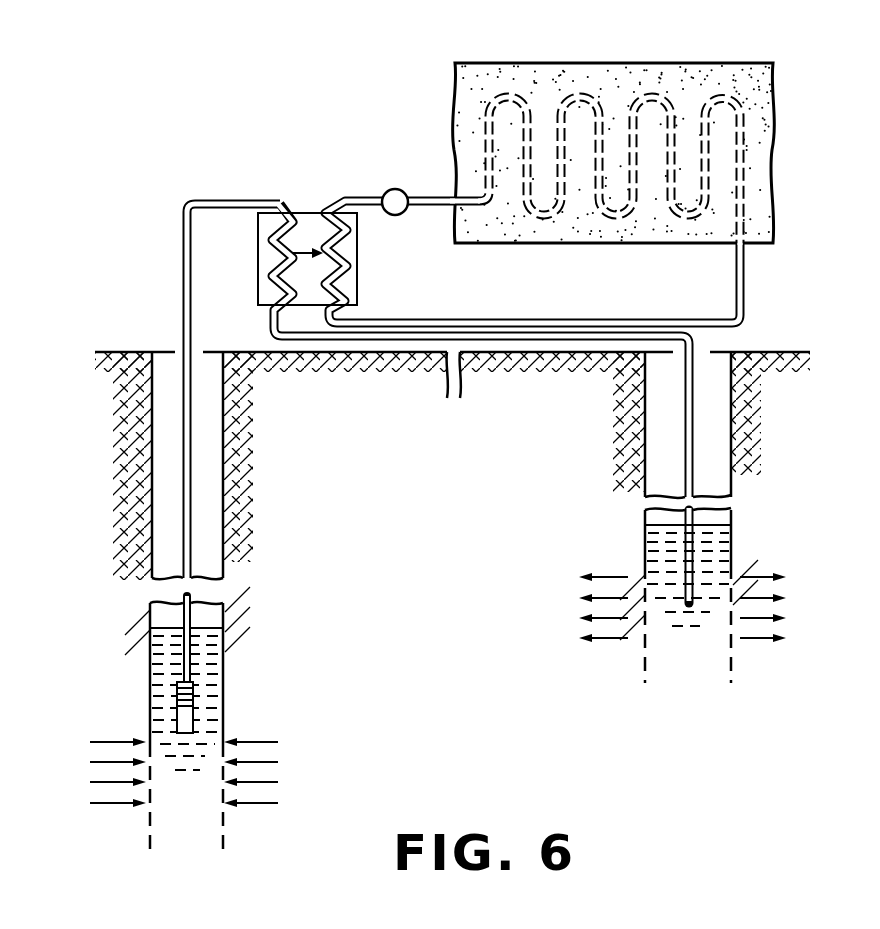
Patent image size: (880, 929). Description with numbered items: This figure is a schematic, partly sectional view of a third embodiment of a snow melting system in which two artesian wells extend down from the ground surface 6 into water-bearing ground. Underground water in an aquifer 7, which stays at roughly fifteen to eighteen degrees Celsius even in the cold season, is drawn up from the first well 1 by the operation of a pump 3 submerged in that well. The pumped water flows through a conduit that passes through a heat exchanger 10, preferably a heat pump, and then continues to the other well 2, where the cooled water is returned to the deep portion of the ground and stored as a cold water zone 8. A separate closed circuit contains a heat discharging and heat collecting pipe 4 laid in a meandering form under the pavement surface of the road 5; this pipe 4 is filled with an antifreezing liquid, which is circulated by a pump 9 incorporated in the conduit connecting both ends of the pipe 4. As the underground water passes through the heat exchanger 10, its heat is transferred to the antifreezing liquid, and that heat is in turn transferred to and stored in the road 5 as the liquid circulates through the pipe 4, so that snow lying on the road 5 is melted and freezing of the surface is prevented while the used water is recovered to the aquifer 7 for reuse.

The well 1 is at (233, 493).
The well 2 is at (733, 475).
The pump 3 is at (197, 705).
The heat discharging and heat collecting pipe 4 is at (664, 97).
The road 5 is at (568, 73).
The ground surface 6 is at (782, 350).
The aquifer 7 is at (48, 793).
The cold water zone 8 is at (818, 623).
The pump 9 is at (395, 189).
The heat exchanger 10 is at (308, 215).